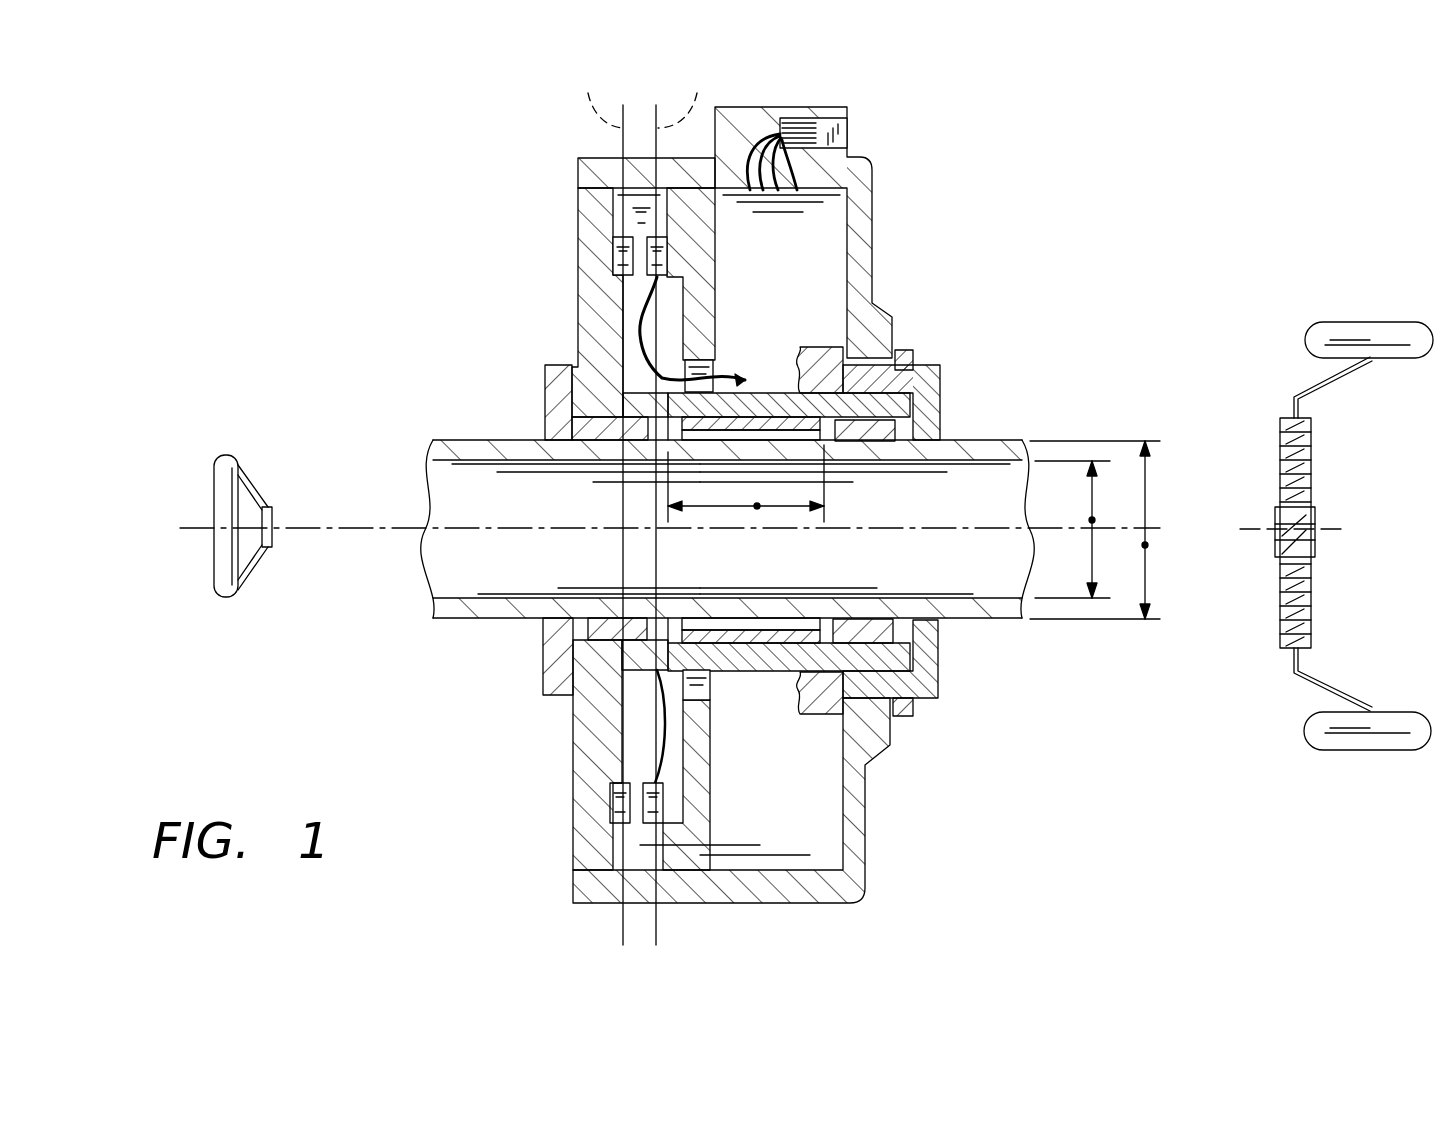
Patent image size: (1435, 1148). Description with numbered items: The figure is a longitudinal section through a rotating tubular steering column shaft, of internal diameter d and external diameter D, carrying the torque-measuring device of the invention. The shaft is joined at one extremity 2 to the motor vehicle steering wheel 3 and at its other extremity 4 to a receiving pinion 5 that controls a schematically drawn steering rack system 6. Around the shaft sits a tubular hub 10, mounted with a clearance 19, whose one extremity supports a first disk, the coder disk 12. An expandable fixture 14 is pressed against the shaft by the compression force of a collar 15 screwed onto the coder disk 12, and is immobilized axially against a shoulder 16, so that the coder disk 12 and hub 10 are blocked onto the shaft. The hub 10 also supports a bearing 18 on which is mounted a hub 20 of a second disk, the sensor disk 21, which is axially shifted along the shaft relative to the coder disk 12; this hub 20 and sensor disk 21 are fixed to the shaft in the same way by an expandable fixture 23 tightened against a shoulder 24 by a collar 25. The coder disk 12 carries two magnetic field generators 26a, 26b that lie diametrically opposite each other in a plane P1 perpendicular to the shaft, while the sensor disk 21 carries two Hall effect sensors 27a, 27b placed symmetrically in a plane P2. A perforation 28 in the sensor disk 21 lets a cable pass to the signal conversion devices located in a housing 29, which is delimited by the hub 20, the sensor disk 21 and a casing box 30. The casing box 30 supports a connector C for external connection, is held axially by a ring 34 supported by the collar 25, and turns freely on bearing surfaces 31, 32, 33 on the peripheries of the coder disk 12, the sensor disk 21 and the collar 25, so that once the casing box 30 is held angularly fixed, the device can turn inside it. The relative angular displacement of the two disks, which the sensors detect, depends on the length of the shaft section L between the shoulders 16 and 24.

The extremity 2 is at (425, 608).
The steering wheel 3 is at (238, 598).
The extremity 4 is at (1035, 605).
The receiving pinion 5 is at (1315, 545).
The steering rack system 6 is at (1308, 620).
The tubular hub 10 is at (660, 445).
The coder disk 12 is at (578, 265).
The expandable fixture 14 is at (600, 418).
The collar 15 is at (545, 390).
The shoulder 16 is at (640, 628).
The bearing 18 is at (763, 423).
The clearance 19 is at (765, 622).
The hub 20 is at (747, 400).
The sensor disk 21 is at (715, 305).
The expandable fixture 23 is at (885, 437).
The shoulder 24 is at (865, 442).
The collar 25 is at (930, 375).
The magnetic field generator 26a is at (618, 250).
The magnetic field generator 26b is at (612, 800).
The Hall effect sensor 27a is at (665, 257).
The Hall effect sensor 27b is at (660, 805).
The perforation 28 is at (708, 690).
The housing 29 is at (835, 272).
The casing box 30 is at (865, 215).
The bearing surface 31 is at (580, 868).
The bearing surface 32 is at (700, 872).
The bearing surface 33 is at (866, 702).
The ring 34 is at (905, 718).
The connector C is at (850, 128).
The plane P1 is at (597, 504).
The plane P2 is at (687, 504).
The section L is at (757, 506).
The internal diameter d is at (1092, 520).
The external diameter D is at (1145, 545).